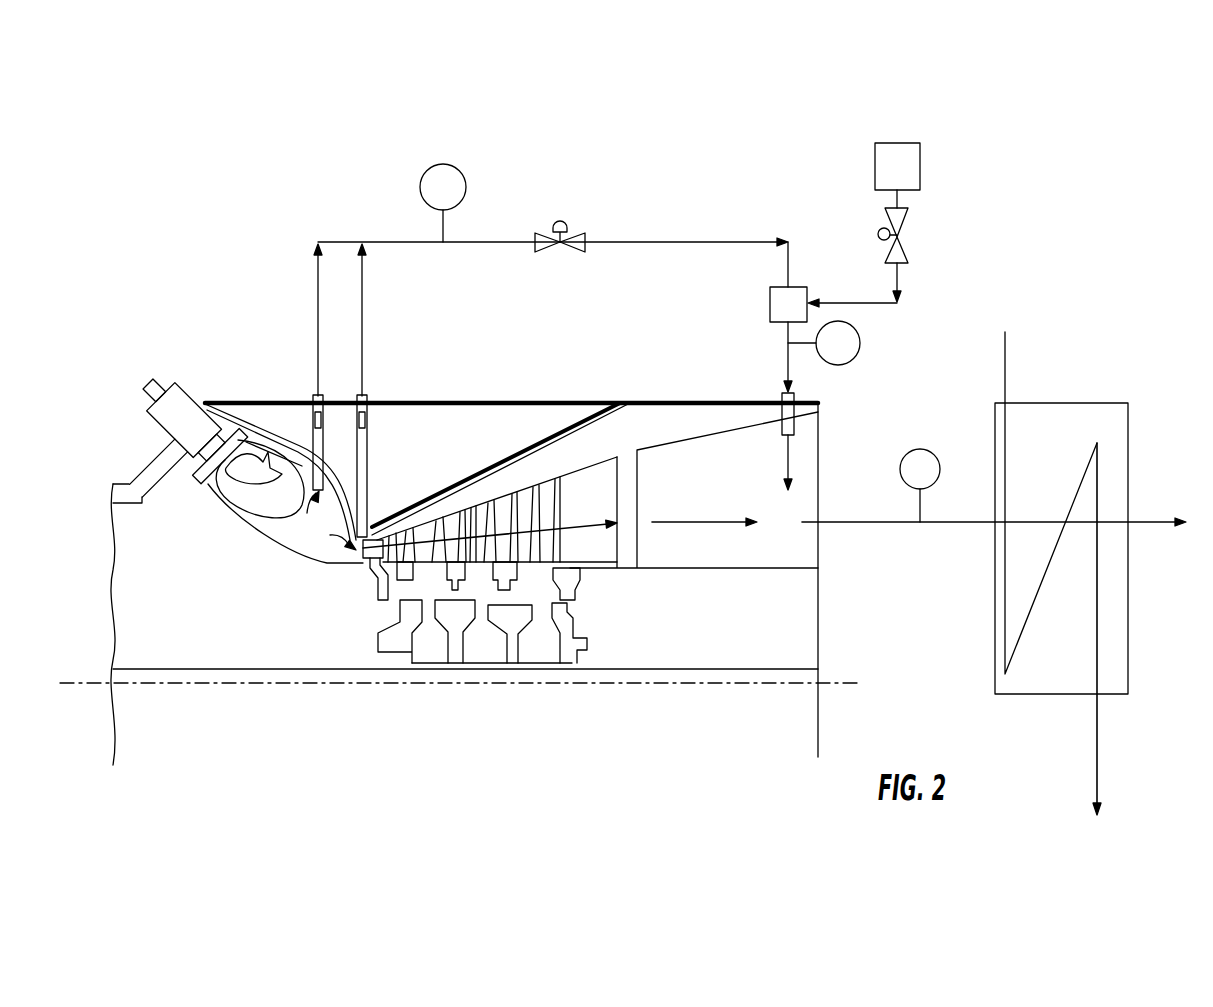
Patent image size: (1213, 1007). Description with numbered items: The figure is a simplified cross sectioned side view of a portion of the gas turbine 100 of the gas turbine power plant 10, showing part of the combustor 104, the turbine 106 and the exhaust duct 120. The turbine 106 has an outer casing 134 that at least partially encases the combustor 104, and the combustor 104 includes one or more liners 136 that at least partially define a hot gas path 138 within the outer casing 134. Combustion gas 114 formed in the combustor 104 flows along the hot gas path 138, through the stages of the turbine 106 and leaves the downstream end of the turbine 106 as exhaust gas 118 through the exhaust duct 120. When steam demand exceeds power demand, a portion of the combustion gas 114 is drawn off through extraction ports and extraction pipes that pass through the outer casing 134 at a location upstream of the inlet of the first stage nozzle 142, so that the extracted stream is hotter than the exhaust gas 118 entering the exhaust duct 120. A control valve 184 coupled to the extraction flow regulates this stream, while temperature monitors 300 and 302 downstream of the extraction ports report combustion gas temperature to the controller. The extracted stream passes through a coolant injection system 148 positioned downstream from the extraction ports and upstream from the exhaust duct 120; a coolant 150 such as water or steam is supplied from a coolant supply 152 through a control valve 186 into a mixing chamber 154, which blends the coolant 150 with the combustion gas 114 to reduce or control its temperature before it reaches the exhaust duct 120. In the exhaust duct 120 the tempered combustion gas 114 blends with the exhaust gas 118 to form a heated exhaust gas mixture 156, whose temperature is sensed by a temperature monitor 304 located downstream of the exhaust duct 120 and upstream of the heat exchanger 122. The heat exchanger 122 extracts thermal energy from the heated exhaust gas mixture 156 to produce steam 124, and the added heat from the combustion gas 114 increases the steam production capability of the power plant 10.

The gas turbine power plant 10 is at (699, 100).
The gas turbine 100 is at (461, 454).
The combustor 104 is at (172, 405).
The turbine 106 is at (620, 698).
The combustion gas 114 is at (316, 283).
The exhaust gas 118 is at (690, 521).
The exhaust duct 120 is at (815, 698).
The heat exchanger 122 is at (1072, 402).
The steam 124 is at (1100, 745).
The outer casing 134 is at (233, 400).
The liner 136 is at (282, 543).
The hot gas path 138 is at (327, 550).
The first stage nozzle 142 is at (368, 523).
The coolant injection system 148 is at (937, 209).
The coolant 150 is at (871, 304).
The coolant supply 152 is at (916, 185).
The mixing chamber 154 is at (782, 306).
The heated exhaust gas mixture 156 is at (808, 524).
The control valve 184 is at (576, 231).
The control valve 186 is at (911, 251).
The temperature monitor 300 is at (455, 181).
The temperature monitor 302 is at (846, 351).
The temperature monitor 304 is at (920, 457).